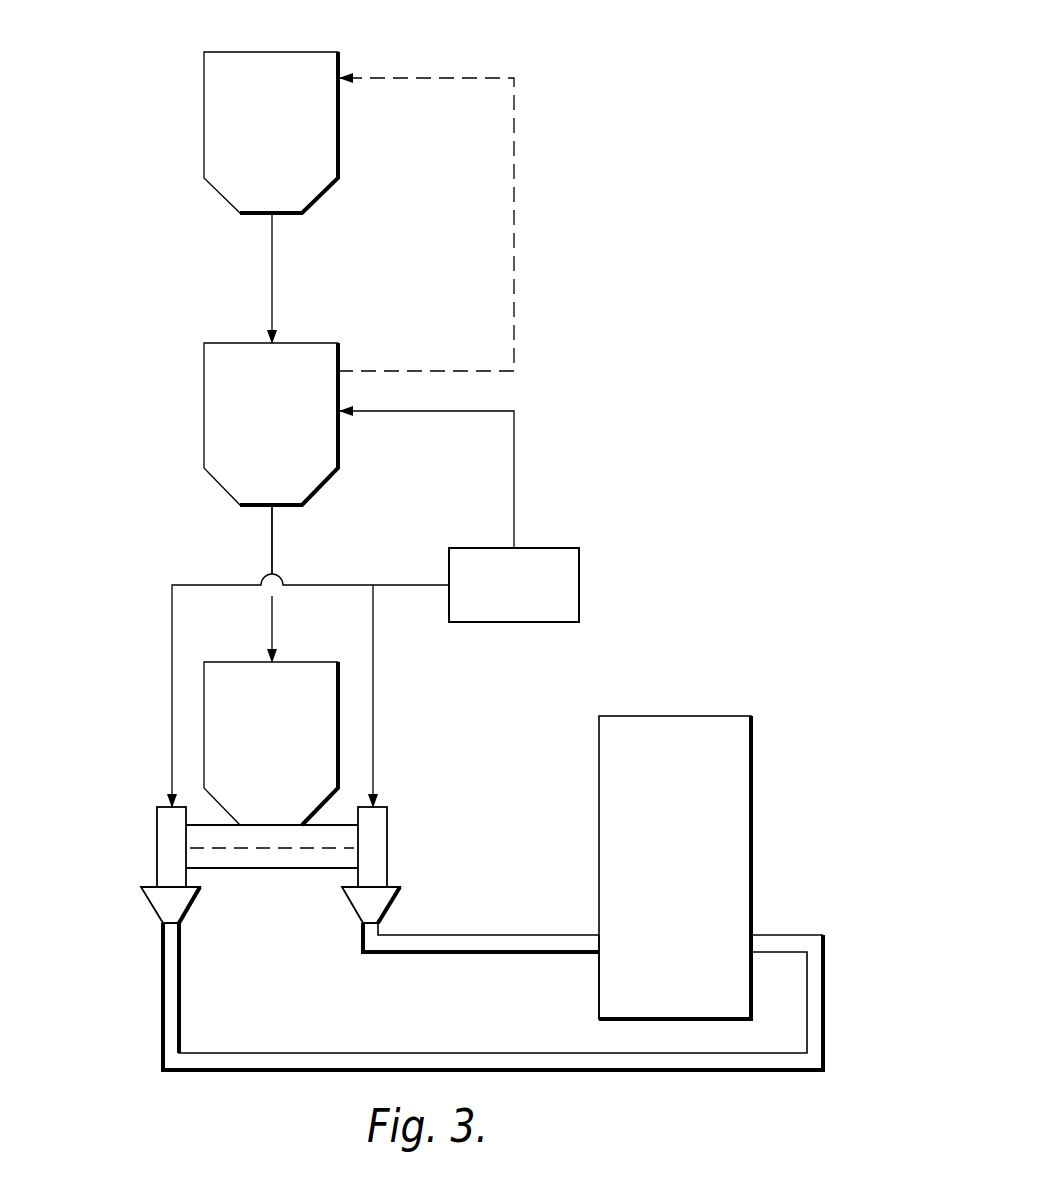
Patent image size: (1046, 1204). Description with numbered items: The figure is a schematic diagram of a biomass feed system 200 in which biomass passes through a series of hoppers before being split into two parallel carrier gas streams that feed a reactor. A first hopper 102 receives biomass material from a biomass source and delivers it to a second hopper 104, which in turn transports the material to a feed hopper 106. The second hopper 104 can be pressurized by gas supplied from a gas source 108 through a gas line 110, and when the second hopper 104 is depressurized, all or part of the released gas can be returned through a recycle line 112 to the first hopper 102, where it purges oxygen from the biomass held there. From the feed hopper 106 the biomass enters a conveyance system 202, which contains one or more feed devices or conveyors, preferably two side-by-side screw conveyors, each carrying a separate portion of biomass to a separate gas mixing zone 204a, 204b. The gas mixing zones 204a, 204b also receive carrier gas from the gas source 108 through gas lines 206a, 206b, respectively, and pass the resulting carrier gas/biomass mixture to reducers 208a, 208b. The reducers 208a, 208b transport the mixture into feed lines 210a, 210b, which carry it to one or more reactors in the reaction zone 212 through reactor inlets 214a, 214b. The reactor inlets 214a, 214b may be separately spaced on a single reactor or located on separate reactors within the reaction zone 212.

The biomass feed system 200 is at (640, 69).
The first hopper 102 is at (204, 78).
The second hopper 104 is at (204, 375).
The feed hopper 106 is at (250, 662).
The gas source 108 is at (580, 574).
The gas line 110 is at (514, 443).
The recycle line 112 is at (514, 172).
The conveyance system 202 is at (300, 870).
The gas mixing zone 204a is at (157, 828).
The gas mixing zone 204b is at (388, 815).
The gas line 206a is at (171, 662).
The gas line 206b is at (374, 655).
The reducer 208a is at (148, 908).
The reducer 208b is at (400, 905).
The feed line 210a is at (282, 1068).
The feed line 210b is at (427, 953).
The reaction zone 212 is at (727, 716).
The reactor inlet 214a is at (753, 934).
The reactor inlet 214b is at (598, 953).